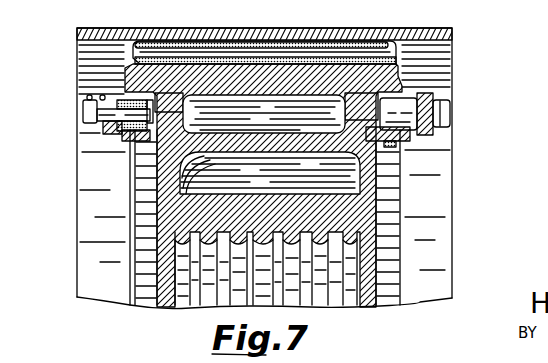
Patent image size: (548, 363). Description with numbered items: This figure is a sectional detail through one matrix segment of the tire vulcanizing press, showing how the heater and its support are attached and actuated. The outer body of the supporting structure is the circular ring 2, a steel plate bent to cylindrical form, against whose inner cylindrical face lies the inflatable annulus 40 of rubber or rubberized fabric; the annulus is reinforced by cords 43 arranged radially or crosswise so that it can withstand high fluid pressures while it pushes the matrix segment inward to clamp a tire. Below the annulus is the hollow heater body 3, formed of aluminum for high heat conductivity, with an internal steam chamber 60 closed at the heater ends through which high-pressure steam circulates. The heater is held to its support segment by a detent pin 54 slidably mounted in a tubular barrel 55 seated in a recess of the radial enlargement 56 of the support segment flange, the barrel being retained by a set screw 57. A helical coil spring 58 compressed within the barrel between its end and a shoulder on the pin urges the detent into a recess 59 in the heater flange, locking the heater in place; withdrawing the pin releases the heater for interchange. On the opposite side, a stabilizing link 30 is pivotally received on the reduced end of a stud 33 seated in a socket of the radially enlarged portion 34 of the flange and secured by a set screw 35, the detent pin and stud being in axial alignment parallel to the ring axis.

The circular ring 2 is at (437, 28).
The heater body 3 is at (373, 213).
The stabilizing link 30 is at (423, 97).
The stud 33 is at (428, 136).
The radially enlarged portion 34 is at (414, 140).
The set screw 35 is at (390, 168).
The inflatable annulus 40 is at (208, 42).
The cords 43 is at (167, 43).
The detent pin 54 is at (83, 112).
The tubular barrel 55 is at (115, 128).
The radial enlargement 56 is at (135, 133).
The set screw 57 is at (137, 165).
The helical coil spring 58 is at (115, 138).
The recess 59 is at (187, 118).
The steam chamber 60 is at (270, 173).